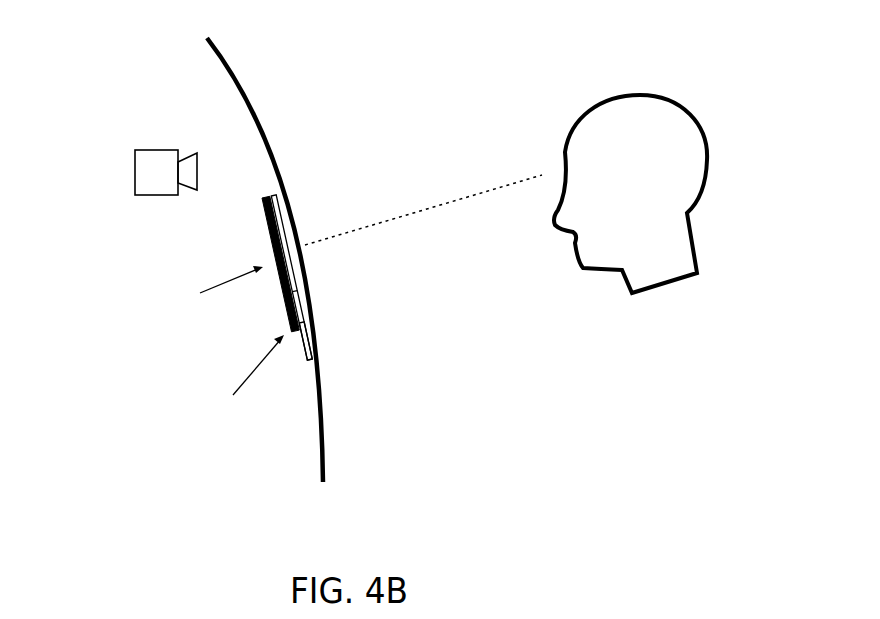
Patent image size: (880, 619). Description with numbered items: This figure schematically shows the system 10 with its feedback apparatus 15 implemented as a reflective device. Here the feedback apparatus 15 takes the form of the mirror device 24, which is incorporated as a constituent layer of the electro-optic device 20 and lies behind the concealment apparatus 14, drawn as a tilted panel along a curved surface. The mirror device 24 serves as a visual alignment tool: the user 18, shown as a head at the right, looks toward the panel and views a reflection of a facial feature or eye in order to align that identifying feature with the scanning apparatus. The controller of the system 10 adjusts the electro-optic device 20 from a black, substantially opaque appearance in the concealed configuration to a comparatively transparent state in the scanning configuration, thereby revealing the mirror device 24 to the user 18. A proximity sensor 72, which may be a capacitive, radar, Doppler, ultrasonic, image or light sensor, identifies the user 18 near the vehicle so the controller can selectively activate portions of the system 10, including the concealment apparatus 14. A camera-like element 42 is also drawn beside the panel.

The system 10 is at (312, 86).
The feedback apparatus 15 is at (315, 194).
The concealment apparatus 14 is at (303, 293).
The electro-optic device 20 is at (291, 277).
The mirror device 24 is at (262, 238).
The proximity sensor 72 is at (317, 341).
The camera 42 is at (140, 172).
The user 18 is at (670, 253).